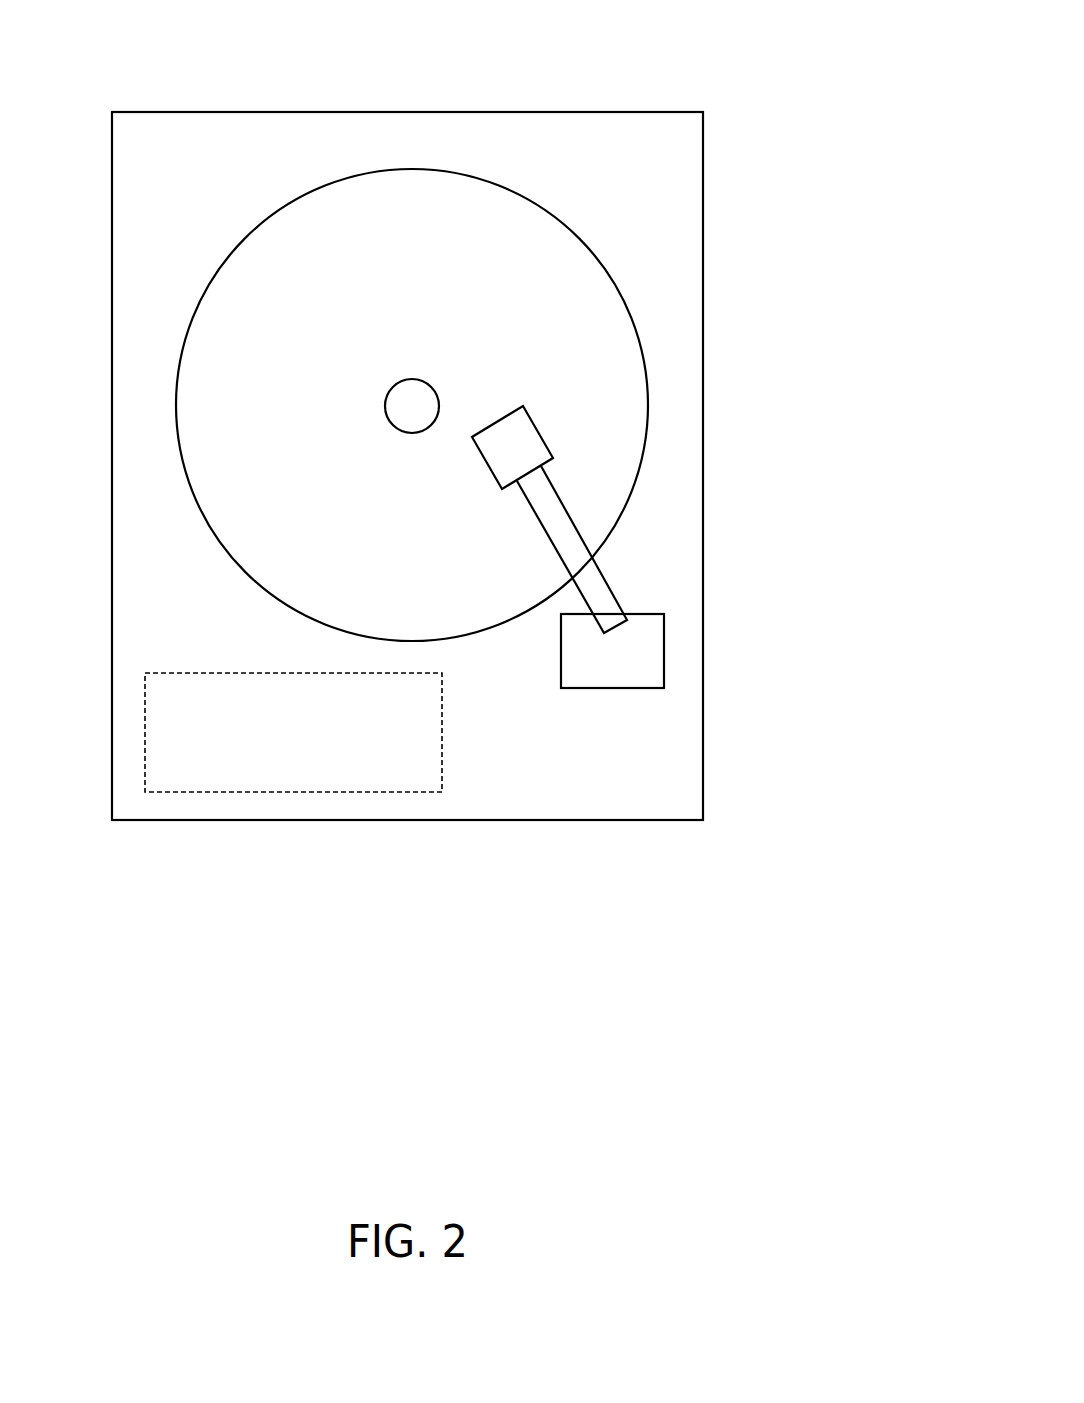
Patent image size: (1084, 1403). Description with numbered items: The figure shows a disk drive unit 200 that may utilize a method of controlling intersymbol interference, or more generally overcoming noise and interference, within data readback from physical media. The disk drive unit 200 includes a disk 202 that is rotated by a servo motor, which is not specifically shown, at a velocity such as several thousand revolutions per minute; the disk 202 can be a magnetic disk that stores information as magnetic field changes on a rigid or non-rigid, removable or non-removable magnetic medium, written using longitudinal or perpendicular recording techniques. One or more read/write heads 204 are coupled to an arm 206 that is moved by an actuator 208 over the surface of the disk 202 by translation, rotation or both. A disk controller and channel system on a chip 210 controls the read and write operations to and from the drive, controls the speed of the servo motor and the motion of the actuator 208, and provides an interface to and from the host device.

The disk drive unit 200 is at (718, 72).
The disk 202 is at (260, 222).
The read/write head 204 is at (542, 437).
The arm 206 is at (578, 529).
The actuator 208 is at (560, 665).
The disk controller and channel system on a chip 210 is at (322, 778).